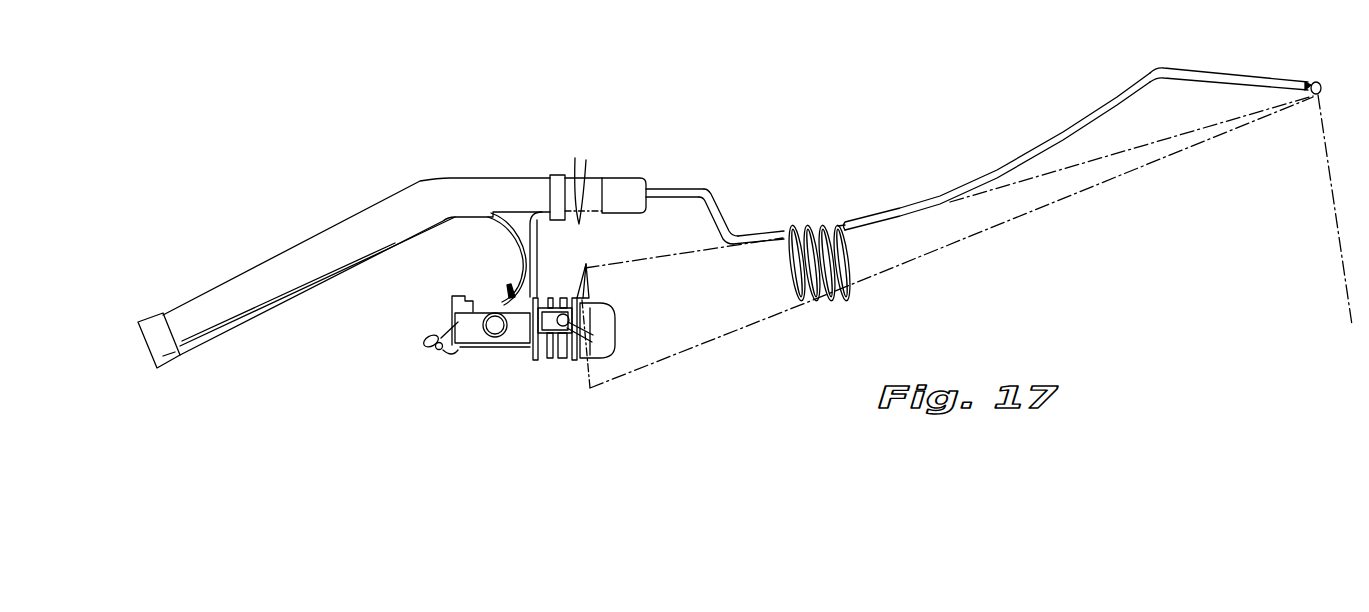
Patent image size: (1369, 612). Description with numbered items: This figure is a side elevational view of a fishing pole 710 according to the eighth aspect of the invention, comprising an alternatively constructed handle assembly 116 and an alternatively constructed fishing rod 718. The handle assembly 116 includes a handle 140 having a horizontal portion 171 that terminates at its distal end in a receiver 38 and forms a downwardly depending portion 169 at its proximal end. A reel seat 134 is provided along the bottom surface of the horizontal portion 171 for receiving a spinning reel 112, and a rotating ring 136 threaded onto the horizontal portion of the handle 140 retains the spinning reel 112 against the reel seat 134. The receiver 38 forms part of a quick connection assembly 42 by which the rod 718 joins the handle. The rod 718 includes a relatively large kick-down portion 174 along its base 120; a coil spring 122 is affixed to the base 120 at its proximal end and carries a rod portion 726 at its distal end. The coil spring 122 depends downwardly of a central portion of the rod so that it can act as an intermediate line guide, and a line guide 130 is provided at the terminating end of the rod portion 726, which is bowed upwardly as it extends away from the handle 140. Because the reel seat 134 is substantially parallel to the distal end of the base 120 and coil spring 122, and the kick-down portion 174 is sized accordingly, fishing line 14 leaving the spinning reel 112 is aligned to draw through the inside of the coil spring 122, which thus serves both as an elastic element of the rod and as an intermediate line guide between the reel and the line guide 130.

The fishing pole 710 is at (323, 173).
The handle 140 is at (258, 270).
The downwardly depending portion 169 is at (403, 197).
The handle assembly 116 is at (335, 325).
The horizontal portion 171 is at (548, 175).
The reel seat 134 is at (580, 172).
The receiver 38 is at (626, 175).
The quick connection assembly 42 is at (674, 176).
The kick-down portion 174 is at (731, 208).
The base 120 is at (760, 234).
The coil spring 122 is at (852, 292).
The fishing rod 718 is at (919, 222).
The rod portion 726 is at (1150, 73).
The line guide 130 is at (1318, 80).
The fishing line 14 is at (1328, 208).
The rotating ring 136 is at (488, 222).
The spinning reel 112 is at (516, 380).